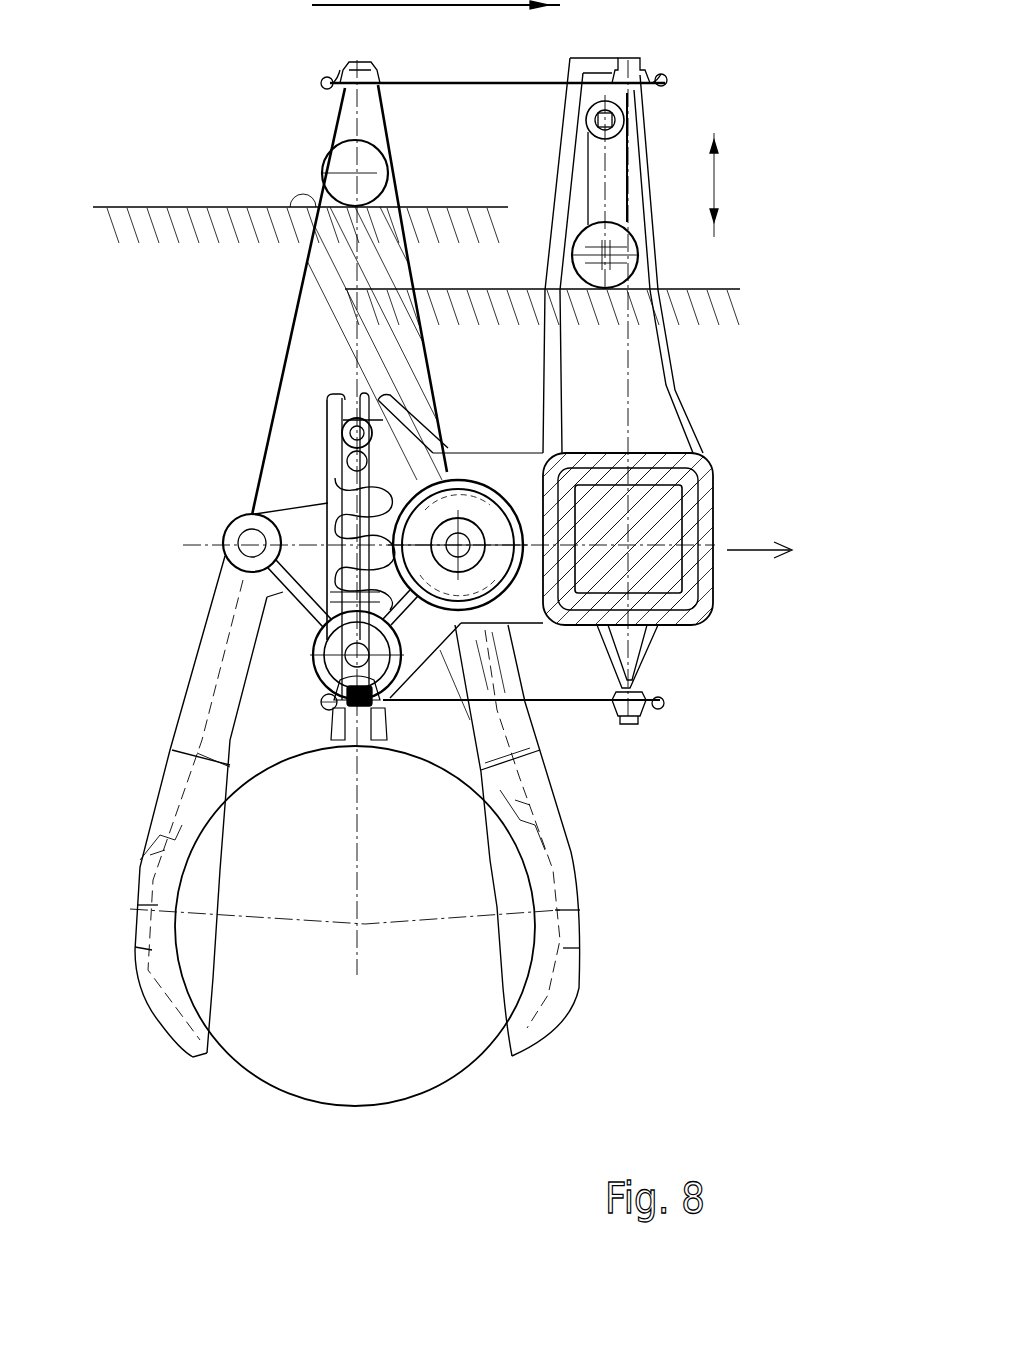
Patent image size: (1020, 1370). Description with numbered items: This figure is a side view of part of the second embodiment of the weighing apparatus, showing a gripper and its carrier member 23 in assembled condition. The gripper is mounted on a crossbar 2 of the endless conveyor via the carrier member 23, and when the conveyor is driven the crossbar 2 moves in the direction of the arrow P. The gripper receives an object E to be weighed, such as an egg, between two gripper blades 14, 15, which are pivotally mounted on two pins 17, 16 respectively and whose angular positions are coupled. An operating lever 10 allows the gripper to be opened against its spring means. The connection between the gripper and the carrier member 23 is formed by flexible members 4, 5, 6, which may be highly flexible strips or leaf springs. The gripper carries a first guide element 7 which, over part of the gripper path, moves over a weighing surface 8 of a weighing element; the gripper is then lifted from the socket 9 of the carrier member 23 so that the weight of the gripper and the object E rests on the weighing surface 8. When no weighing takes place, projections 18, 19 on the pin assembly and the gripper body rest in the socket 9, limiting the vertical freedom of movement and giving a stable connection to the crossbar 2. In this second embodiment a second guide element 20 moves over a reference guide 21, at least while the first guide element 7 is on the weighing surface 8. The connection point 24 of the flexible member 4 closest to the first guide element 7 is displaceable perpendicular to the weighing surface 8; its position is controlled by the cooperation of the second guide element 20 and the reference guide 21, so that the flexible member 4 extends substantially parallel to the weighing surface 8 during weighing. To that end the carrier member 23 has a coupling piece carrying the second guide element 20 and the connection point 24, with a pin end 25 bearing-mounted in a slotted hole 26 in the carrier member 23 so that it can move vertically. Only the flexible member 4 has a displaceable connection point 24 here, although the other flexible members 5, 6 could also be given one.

The crossbar 2 is at (688, 517).
The flexible member 4 is at (458, 82).
The flexible member 5 is at (570, 705).
The flexible member 6 is at (523, 693).
The first guide element 7 is at (368, 186).
The weighing surface 8 is at (470, 207).
The socket 9 is at (347, 458).
The operating lever 10 is at (445, 440).
The gripper blade 14 is at (545, 1028).
The gripper blade 15 is at (175, 1020).
The pin 16 is at (240, 543).
The pin 17 is at (460, 540).
The projection 18 is at (322, 701).
The projection 19 is at (345, 428).
The second guide element 20 is at (638, 260).
The reference guide 21 is at (727, 288).
The carrier member 23 is at (707, 455).
The connection point 24 is at (663, 80).
The pin end 25 is at (620, 123).
The slotted hole 26 is at (630, 98).
The object E is at (388, 1008).
The arrow P is at (772, 552).